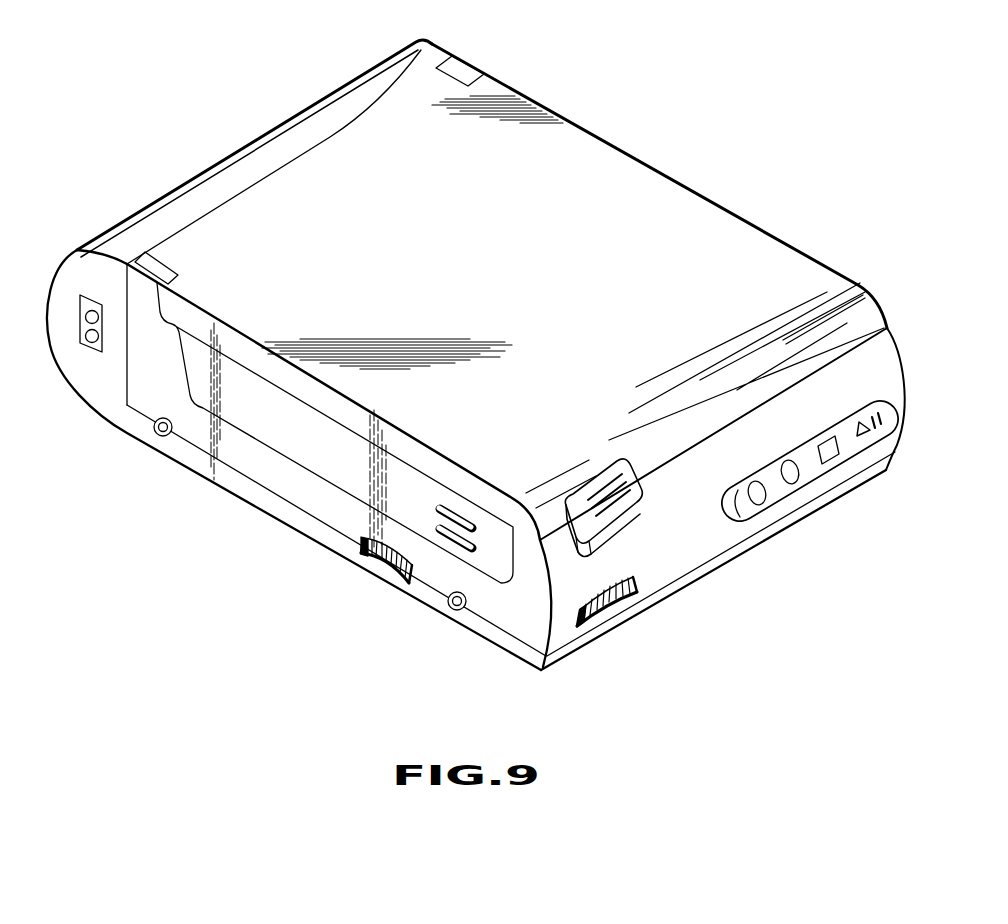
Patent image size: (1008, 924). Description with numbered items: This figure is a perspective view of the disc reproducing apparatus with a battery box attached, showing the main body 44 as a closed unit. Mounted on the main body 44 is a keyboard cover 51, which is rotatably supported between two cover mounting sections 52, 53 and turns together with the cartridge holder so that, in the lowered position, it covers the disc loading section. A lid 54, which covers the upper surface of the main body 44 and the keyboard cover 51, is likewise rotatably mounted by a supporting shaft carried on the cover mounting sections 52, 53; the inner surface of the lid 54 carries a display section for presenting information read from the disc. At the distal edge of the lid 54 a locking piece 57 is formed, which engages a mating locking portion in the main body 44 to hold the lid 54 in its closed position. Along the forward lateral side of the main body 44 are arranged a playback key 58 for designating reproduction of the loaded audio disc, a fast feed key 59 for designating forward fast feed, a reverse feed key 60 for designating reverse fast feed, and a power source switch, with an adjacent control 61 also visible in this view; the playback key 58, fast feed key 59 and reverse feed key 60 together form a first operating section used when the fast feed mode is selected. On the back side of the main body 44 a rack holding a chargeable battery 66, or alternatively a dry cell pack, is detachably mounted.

The main body 44 is at (889, 347).
The keyboard cover 51 is at (323, 473).
The cover mounting section 52 is at (170, 273).
The cover mounting section 53 is at (468, 66).
The lid 54 is at (658, 164).
The locking piece 57 is at (606, 473).
The playback key 58 is at (822, 472).
The fast feed key 59 is at (752, 513).
The reverse feed key 60 is at (790, 492).
The play/pause button 61 is at (866, 447).
The chargeable battery 66 is at (103, 400).